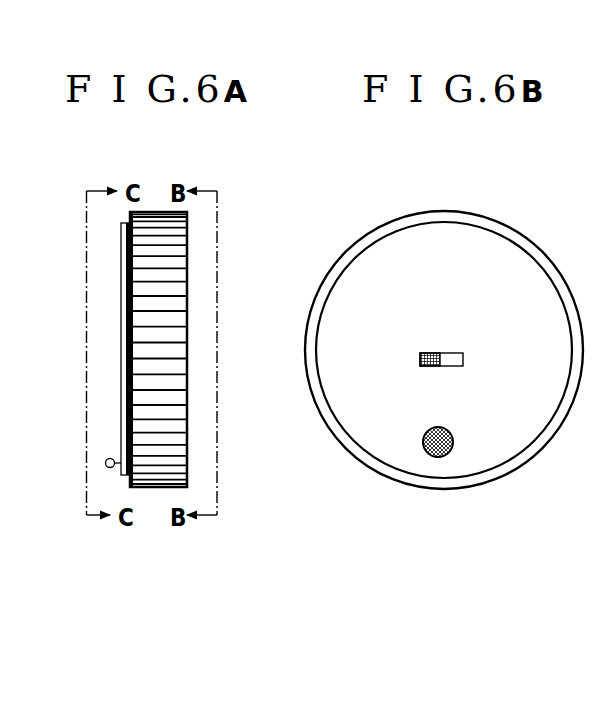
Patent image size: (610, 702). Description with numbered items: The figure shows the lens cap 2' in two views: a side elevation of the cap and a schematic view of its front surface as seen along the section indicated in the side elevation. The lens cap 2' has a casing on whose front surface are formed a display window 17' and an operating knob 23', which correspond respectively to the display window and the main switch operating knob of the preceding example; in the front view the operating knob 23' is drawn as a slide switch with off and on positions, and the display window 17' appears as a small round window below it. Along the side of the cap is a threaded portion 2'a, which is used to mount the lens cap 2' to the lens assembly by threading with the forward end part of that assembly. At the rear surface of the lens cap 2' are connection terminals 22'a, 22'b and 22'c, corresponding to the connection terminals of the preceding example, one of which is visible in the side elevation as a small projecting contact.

In FIG. 6A, the lens cap 2' is at (199, 336).
In FIG. 6B, the lens cap 2' is at (444, 330).
In FIG. 6A, the threaded portion 2'a is at (80, 349).
In FIG. 6A, the connection terminal 22'c is at (78, 480).
In FIG. 6A, the connection terminal 22'b is at (58, 524).
In FIG. 6A, the connection terminal 22'a is at (57, 560).
In FIG. 6B, the operating knob 23' is at (444, 346).
In FIG. 6B, the display window 17' is at (468, 426).